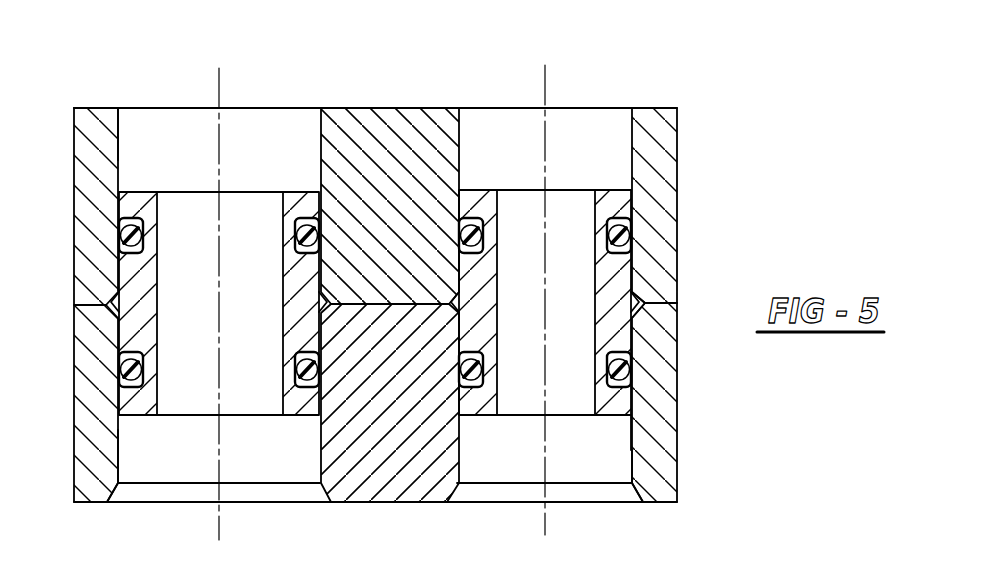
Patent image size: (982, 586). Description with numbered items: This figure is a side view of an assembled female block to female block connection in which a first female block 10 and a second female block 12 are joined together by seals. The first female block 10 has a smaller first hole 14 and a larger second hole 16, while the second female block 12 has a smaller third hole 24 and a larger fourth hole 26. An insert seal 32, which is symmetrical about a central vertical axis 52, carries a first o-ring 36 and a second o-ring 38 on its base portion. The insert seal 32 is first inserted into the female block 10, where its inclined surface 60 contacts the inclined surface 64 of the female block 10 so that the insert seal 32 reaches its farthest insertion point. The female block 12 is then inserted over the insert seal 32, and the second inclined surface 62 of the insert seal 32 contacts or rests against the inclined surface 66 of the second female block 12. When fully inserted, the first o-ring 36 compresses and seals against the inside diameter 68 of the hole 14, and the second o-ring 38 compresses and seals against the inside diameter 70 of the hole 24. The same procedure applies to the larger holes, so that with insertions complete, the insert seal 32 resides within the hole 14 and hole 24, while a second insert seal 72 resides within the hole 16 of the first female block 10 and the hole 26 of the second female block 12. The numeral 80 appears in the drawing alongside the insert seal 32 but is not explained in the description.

The first female block 10 is at (446, 299).
The second female block 12 is at (677, 476).
The first hole 14 is at (633, 146).
The second hole 16 is at (118, 140).
The third hole 24 is at (632, 465).
The fourth hole 26 is at (118, 444).
The insert seal 32 is at (615, 229).
The piston sleeve 80 is at (545, 302).
The first o-ring 36 is at (633, 230).
The second o-ring 38 is at (633, 372).
The central vertical axis 52 is at (545, 83).
The inclined surface 60 is at (645, 303).
The second inclined surface 62 is at (416, 435).
The inclined surface 64 is at (638, 302).
The inclined surface 66 is at (445, 306).
The inside diameter 68 is at (460, 150).
The inside diameter 70 is at (631, 437).
The second insert seal 72 is at (290, 187).